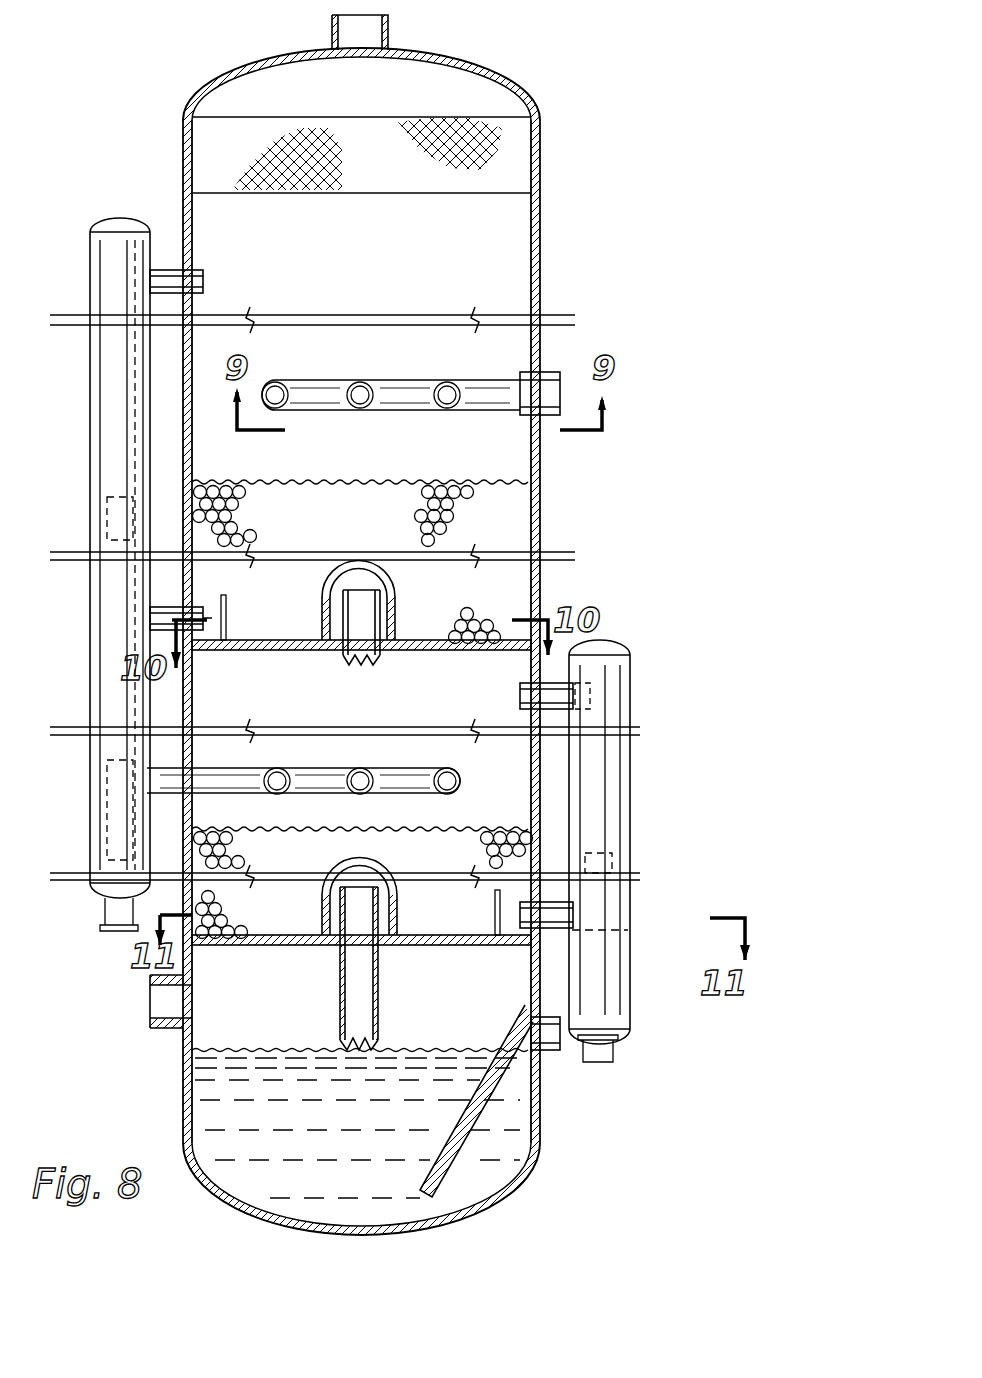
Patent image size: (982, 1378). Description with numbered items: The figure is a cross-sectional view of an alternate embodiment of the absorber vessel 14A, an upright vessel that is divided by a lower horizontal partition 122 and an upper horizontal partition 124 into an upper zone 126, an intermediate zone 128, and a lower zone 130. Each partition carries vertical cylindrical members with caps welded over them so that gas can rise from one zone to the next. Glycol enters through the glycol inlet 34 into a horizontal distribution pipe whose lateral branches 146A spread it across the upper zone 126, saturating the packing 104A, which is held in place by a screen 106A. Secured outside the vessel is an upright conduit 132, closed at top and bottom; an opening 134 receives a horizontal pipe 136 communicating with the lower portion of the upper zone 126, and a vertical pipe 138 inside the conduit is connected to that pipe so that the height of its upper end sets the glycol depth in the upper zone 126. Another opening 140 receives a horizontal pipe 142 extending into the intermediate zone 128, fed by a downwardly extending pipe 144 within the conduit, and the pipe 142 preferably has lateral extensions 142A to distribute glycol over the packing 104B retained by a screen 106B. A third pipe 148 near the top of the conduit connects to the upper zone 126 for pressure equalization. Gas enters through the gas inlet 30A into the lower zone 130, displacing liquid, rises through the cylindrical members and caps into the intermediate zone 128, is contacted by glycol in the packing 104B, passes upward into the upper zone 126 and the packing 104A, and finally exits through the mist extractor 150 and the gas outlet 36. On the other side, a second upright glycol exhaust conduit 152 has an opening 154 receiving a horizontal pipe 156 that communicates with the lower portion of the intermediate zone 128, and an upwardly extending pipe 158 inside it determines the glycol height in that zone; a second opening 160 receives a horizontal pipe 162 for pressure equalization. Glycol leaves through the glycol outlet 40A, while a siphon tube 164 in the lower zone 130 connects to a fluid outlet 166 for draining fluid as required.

The absorber vessel 14A is at (541, 585).
The gas outlet 36 is at (389, 22).
The mist extractor 150 is at (512, 140).
The upper zone 126 is at (390, 262).
The third horizontal pipe 148 is at (180, 288).
The lateral branches 146A is at (391, 392).
The glycol inlet 34 is at (540, 385).
The upright conduit 132 is at (108, 422).
The vertical pipe 138 is at (108, 518).
The downwardly extending pipe 144 is at (105, 822).
The opening 134 is at (150, 618).
The horizontal pipe 136 is at (198, 605).
The screen 106A is at (505, 482).
The packing 104A is at (460, 505).
The upper horizontal partition 124 is at (424, 640).
The intermediate zone 128 is at (385, 704).
The glycol exhaust conduit 152 is at (612, 700).
The second opening 160 is at (576, 696).
The horizontal pipe 162 is at (524, 696).
The horizontal pipe 156 is at (562, 908).
The opening 154 is at (592, 930).
The upwardly extending pipe 158 is at (600, 856).
The fluid outlet 166 is at (572, 1032).
The glycol outlet 40A is at (598, 1052).
The horizontal pipe 142 is at (250, 780).
The opening 140 is at (147, 782).
The lateral extensions 142A is at (245, 765).
The screen 106B is at (425, 829).
The packing 104B is at (482, 860).
The lower horizontal partition 122 is at (488, 935).
The lower zone 130 is at (300, 1017).
The gas inlet 30A is at (160, 1008).
The siphon tube 164 is at (462, 1148).